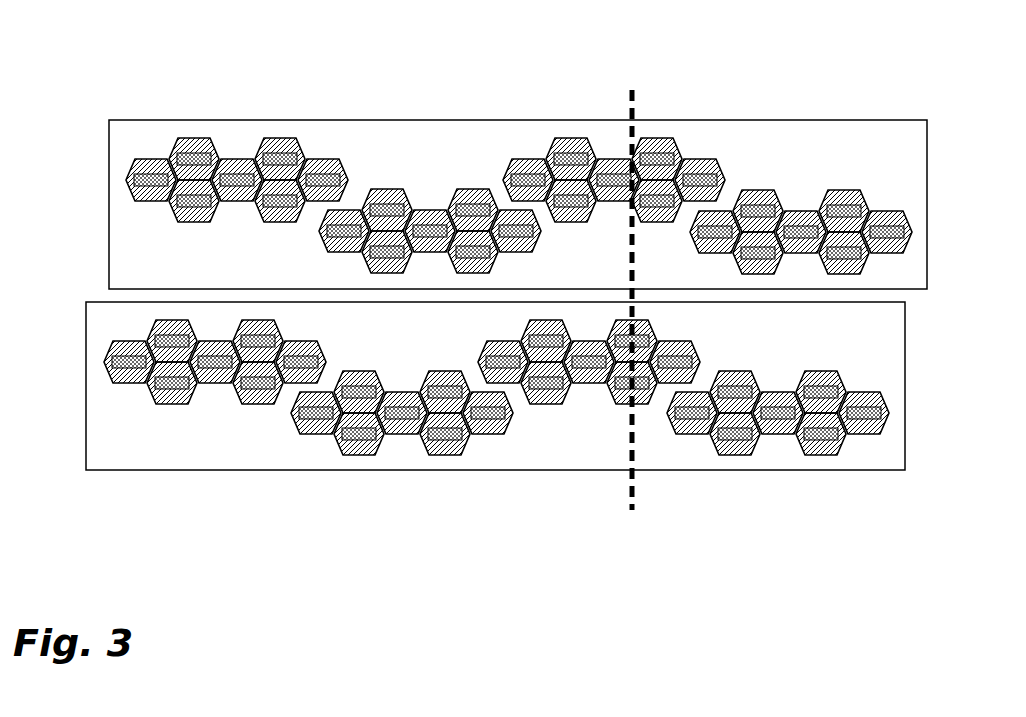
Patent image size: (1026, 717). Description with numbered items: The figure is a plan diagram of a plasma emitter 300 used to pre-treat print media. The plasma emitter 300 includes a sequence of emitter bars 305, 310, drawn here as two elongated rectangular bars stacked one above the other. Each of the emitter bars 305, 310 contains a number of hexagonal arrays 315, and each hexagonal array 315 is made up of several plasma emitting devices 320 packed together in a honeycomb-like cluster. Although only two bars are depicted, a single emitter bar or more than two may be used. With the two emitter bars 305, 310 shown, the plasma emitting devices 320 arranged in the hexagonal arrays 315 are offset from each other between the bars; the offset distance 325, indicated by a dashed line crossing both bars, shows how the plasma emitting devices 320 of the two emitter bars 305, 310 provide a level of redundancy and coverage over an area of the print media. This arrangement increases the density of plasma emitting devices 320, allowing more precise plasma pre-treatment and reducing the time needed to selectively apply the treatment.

The plasma emitter 300 is at (103, 60).
The emitter bar 305 is at (128, 158).
The emitter bar 310 is at (97, 335).
The hexagonal array 315 is at (117, 225).
The plasma emitting device 320 is at (285, 158).
The offset distance 325 is at (630, 93).